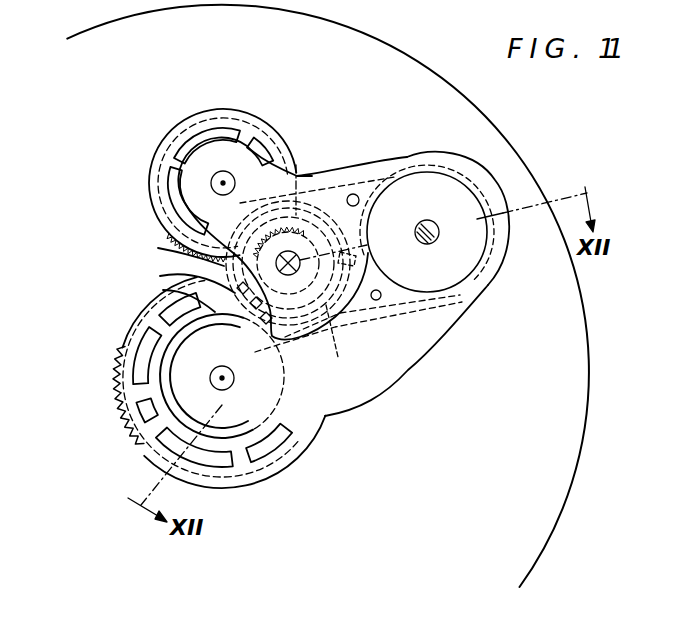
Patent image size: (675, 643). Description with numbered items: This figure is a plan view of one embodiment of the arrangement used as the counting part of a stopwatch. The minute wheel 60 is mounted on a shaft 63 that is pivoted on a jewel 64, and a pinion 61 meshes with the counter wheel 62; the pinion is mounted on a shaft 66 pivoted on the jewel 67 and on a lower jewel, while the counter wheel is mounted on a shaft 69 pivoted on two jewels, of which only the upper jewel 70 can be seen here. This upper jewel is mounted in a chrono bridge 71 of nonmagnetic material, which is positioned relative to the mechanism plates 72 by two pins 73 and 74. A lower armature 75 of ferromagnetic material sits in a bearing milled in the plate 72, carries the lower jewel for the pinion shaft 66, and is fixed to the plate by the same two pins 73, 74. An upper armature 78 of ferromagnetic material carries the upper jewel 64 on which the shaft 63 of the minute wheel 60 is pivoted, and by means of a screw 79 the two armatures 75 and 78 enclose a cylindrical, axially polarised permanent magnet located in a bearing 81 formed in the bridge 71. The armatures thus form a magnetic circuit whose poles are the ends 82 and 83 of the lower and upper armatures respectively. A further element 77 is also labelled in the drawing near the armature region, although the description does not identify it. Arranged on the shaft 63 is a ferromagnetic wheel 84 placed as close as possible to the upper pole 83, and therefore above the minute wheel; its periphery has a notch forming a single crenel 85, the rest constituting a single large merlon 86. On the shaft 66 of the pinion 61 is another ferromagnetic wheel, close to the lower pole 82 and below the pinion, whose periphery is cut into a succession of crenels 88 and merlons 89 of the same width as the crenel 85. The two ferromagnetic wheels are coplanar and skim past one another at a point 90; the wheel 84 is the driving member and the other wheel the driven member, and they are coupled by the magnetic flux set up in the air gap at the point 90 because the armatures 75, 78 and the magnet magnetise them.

The minute wheel 60 is at (118, 388).
The pinion 61 is at (339, 340).
The counter wheel 62 is at (226, 108).
The shaft 63 is at (235, 375).
The jewel 64 is at (232, 387).
The shaft 66 is at (280, 271).
The jewel 67 is at (293, 261).
The shaft 69 is at (221, 171).
The upper jewel 70 is at (236, 183).
The chrono bridge 71 is at (305, 184).
The mechanism plate 72 is at (328, 296).
The pin 73 is at (353, 194).
The pin 74 is at (389, 284).
The lower armature 75 is at (410, 294).
The pawl 77 is at (364, 225).
The upper armature 78 is at (408, 366).
The screw 79 is at (429, 220).
The bearing 81 is at (402, 162).
The end of lower armature 82 is at (176, 243).
The end of upper armature 83 is at (284, 386).
The ferromagnetic wheel 84 is at (145, 312).
The crenel 85 is at (185, 436).
The merlon 86 is at (197, 440).
The crenels 88 is at (166, 258).
The merlons 89 is at (172, 278).
The point 90 is at (230, 336).